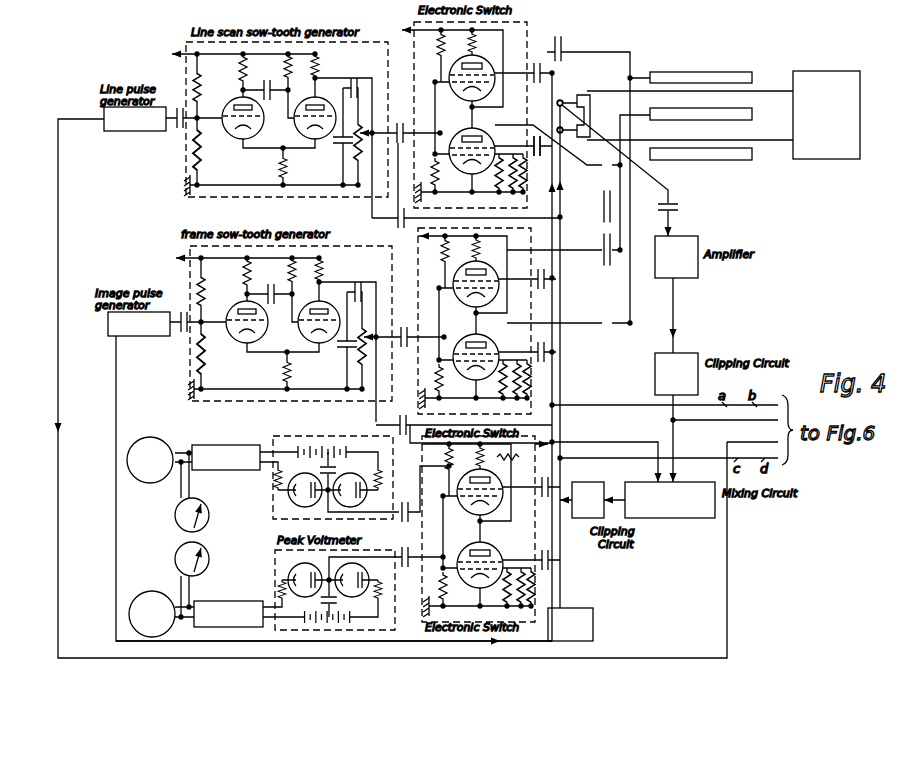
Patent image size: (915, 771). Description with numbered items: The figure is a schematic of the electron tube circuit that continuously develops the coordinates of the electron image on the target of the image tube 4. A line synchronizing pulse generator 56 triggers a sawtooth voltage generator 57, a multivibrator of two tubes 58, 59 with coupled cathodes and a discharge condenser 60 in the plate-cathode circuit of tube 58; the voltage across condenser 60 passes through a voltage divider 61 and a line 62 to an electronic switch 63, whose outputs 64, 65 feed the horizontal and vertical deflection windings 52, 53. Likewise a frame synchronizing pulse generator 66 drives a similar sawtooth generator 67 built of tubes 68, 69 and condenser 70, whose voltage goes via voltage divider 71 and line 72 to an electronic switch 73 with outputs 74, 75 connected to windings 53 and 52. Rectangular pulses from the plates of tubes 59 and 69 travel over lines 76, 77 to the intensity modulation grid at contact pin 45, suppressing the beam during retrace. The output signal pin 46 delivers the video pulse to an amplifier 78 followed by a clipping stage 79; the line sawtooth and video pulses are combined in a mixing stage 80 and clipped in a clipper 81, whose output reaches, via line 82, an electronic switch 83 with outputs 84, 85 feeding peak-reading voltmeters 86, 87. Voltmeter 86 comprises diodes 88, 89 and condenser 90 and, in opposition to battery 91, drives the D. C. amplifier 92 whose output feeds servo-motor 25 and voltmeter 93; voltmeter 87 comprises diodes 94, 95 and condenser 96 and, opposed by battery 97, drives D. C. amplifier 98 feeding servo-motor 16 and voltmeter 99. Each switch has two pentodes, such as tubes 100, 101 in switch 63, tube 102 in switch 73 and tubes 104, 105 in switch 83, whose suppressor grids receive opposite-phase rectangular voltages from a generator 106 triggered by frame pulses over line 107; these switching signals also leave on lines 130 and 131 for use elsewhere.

The image tube 4 is at (781, 147).
The servo-motor 16 is at (152, 614).
The servo-motor 25 is at (150, 460).
The contact pin 45 is at (567, 134).
The output signal pin 46 is at (563, 101).
The horizontal deflection winding 52 is at (708, 70).
The vertical deflection winding 53 is at (706, 118).
The line synchronizing pulse generator 56 is at (135, 119).
The sawtooth voltage generator 57 is at (304, 130).
The tube 58 is at (235, 140).
The tube 59 is at (318, 140).
The condenser 60 is at (338, 150).
The voltage divider 61 is at (353, 148).
The line 62 is at (392, 127).
The electronic switch 63 is at (483, 115).
The output 64 is at (540, 44).
The output 65 is at (537, 84).
The frame synchronizing pulse generator 66 is at (139, 324).
The sawtooth generator 67 is at (308, 334).
The tube 68 is at (239, 344).
The tube 69 is at (322, 344).
The condenser 70 is at (341, 353).
The voltage divider 71 is at (356, 352).
The line 72 is at (398, 325).
The electronic switch 73 is at (487, 321).
The output 74 is at (540, 265).
The output 75 is at (540, 338).
The line 76 is at (386, 220).
The line 77 is at (380, 421).
The amplifier 78 is at (676, 257).
The clipping stage 79 is at (676, 374).
The mixing stage 80 is at (670, 500).
The clipper 81 is at (588, 500).
The line 82 is at (578, 518).
The electronic switch 83 is at (491, 529).
The output 84 is at (416, 518).
The output 85 is at (416, 570).
The peak-reading voltmeter 86 is at (333, 486).
The peak-reading voltmeter 87 is at (335, 599).
The diode 88 is at (296, 502).
The diode 89 is at (352, 505).
The condenser 90 is at (327, 477).
The battery 91 is at (321, 440).
The D. C. amplifier 92 is at (226, 457).
The voltmeter 93 is at (192, 515).
The diode 94 is at (306, 565).
The diode 95 is at (361, 571).
The condenser 96 is at (327, 596).
The battery 97 is at (350, 619).
The D. C. amplifier 98 is at (228, 614).
The voltmeter 99 is at (192, 559).
The pentode tube 100 is at (488, 86).
The pentode tube 101 is at (468, 164).
The pentode tube 102 is at (466, 270).
The pentode tube 104 is at (496, 480).
The pentode tube 105 is at (470, 362).
The generator 106 is at (570, 624).
The line 107 is at (421, 641).
The line 130 is at (556, 314).
The line 131 is at (562, 342).